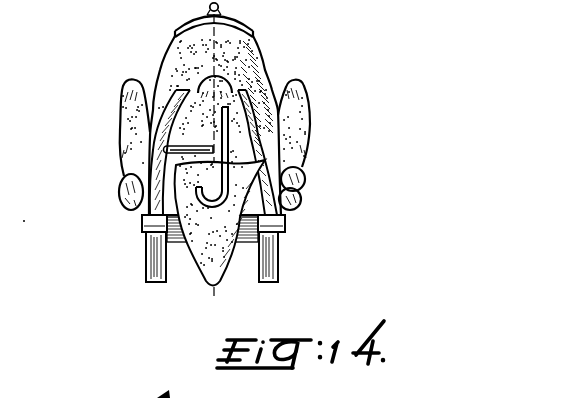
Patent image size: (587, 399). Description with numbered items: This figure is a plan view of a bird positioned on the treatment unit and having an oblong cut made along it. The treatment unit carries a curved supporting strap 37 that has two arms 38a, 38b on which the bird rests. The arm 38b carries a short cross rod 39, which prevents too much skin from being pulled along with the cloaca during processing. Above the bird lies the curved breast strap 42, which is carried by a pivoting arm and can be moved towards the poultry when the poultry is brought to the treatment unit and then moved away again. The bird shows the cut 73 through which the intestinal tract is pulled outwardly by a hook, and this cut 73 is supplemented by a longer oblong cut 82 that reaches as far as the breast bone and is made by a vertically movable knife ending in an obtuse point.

The curved breast strap 42 is at (252, 32).
The arm of supporting strap 38a is at (264, 160).
The arm of supporting strap 38b is at (163, 137).
The short cross rod 39 is at (120, 190).
The oblong cut 82 is at (302, 188).
The cut 73 is at (162, 218).
The curved supporting strap 37 is at (244, 238).